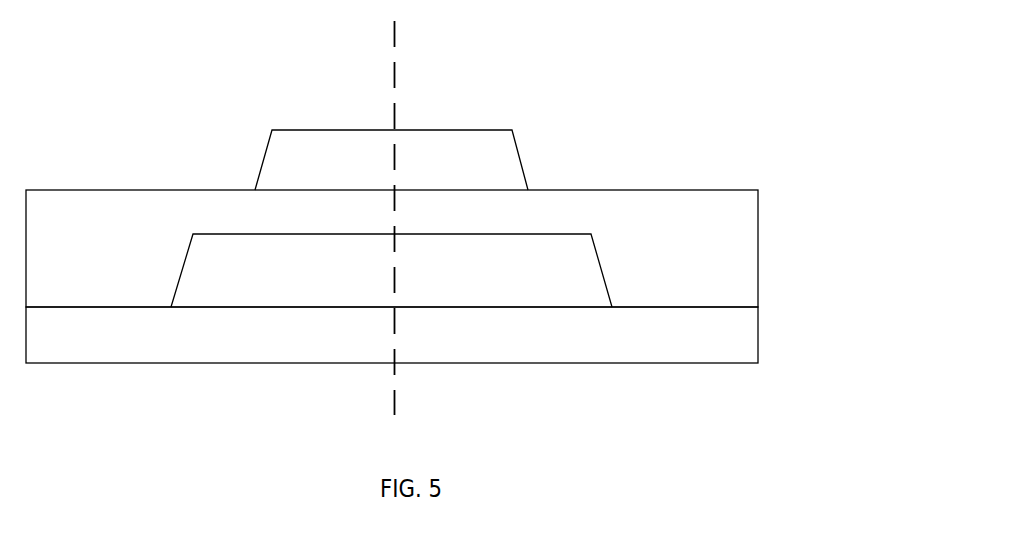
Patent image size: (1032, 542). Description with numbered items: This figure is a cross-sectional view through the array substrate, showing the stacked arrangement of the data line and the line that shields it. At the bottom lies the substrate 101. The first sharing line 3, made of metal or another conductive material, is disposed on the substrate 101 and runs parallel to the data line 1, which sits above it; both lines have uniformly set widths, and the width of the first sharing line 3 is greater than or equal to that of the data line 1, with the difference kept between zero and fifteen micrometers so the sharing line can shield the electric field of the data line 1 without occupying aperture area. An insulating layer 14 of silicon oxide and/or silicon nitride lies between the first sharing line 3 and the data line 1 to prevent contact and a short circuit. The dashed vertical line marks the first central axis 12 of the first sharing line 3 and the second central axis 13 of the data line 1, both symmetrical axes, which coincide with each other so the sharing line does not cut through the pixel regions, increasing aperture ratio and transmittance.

The data line 1 is at (407, 131).
The first sharing line 3 is at (450, 179).
The first central axis 12 is at (487, 207).
The second central axis 13 is at (487, 207).
The insulating layer 14 is at (445, 228).
The substrate 101 is at (473, 296).